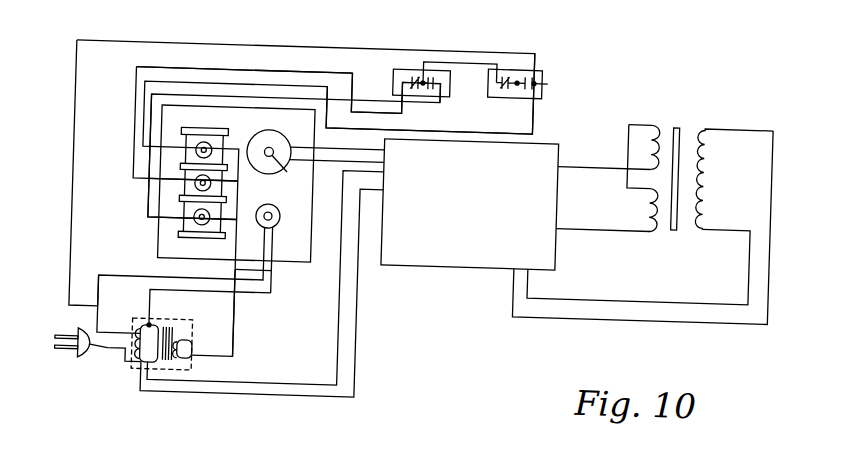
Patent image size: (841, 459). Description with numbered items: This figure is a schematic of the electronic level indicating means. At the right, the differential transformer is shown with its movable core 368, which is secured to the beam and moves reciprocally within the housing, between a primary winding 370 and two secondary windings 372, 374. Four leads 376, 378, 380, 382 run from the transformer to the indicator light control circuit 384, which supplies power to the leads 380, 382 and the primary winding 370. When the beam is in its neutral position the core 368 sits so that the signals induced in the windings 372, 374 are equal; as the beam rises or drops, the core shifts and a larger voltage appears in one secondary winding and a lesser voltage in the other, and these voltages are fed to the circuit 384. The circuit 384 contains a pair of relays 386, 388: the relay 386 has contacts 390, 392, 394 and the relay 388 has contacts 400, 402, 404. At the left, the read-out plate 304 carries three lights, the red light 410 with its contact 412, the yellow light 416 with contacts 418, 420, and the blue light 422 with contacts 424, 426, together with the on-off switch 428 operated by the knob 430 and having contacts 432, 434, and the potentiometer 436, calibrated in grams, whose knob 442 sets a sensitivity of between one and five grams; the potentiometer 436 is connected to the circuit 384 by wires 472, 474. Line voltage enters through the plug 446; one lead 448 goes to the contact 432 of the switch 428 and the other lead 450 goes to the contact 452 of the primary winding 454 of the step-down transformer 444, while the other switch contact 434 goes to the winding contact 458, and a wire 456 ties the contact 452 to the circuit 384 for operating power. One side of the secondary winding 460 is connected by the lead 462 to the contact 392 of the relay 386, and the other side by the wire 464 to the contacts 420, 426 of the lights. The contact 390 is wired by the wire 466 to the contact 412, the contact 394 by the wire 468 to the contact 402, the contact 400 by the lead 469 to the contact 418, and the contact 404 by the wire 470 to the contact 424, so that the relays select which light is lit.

The read-out plate 304 is at (268, 133).
The core 368 is at (677, 120).
The primary winding 370 is at (709, 169).
The secondary winding 372 is at (650, 117).
The secondary winding 374 is at (653, 222).
The lead 376 is at (598, 162).
The lead 378 is at (603, 222).
The lead 380 is at (602, 295).
The lead 382 is at (586, 315).
The indicator light control circuit 384 is at (478, 194).
The relay 386 is at (538, 68).
The relay 388 is at (407, 76).
The contact 390 is at (543, 80).
The contact 392 is at (514, 79).
The contact 394 is at (500, 78).
The contact 400 is at (437, 85).
The contact 402 is at (420, 81).
The contact 404 is at (389, 77).
The red light 410 is at (195, 141).
The contact 412 is at (140, 129).
The yellow light 416 is at (184, 198).
The contact 418 is at (132, 174).
The contact 420 is at (236, 186).
The blue light 422 is at (205, 245).
The contact 424 is at (148, 226).
The contact 426 is at (257, 215).
The on-off switch 428 is at (280, 214).
The knob 430 is at (277, 226).
The contact 432 is at (273, 276).
The contact 434 is at (273, 241).
The potentiometer 436 is at (272, 134).
The knob 442 is at (292, 171).
The step-down transformer 444 is at (192, 375).
The plug 446 is at (82, 365).
The lead 448 is at (100, 330).
The lead 450 is at (112, 357).
The contact 452 is at (150, 373).
The primary winding 454 is at (168, 336).
The wire 456 is at (341, 338).
The contact 458 is at (152, 332).
The secondary winding 460 is at (199, 358).
The lead 462 is at (71, 227).
The wire 464 is at (237, 316).
The wire 466 is at (534, 106).
The wire 468 is at (492, 60).
The lead 469 is at (364, 102).
The wire 470 is at (314, 75).
The wire 472 is at (370, 150).
The wire 474 is at (322, 164).